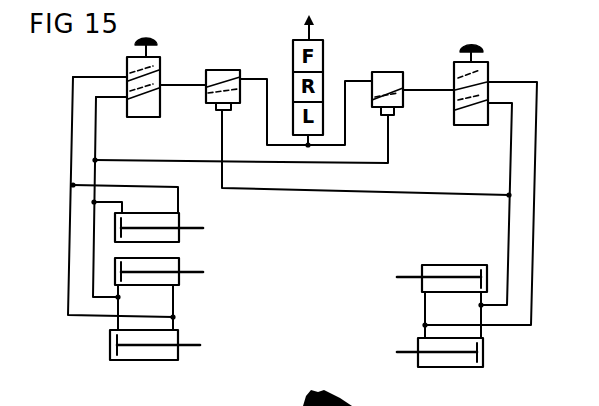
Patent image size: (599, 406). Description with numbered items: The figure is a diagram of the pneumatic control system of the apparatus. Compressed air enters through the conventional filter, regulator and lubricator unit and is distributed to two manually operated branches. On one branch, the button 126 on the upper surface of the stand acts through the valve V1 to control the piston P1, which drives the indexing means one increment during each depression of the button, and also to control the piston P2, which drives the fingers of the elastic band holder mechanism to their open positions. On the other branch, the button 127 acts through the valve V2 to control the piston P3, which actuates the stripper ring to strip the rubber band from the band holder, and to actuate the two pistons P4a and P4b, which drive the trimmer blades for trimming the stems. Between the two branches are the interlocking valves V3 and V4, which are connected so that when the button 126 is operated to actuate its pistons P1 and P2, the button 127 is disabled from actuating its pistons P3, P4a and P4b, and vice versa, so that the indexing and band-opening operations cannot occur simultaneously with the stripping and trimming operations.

The button 126 is at (475, 47).
The button 127 is at (148, 39).
The valve V1 is at (462, 125).
The valve V2 is at (147, 117).
The interlocking valve V3 is at (393, 72).
The interlocking valve V4 is at (226, 70).
The piston P1 is at (445, 273).
The piston P2 is at (440, 353).
The piston P3 is at (163, 225).
The piston P4a is at (170, 270).
The piston P4b is at (167, 342).